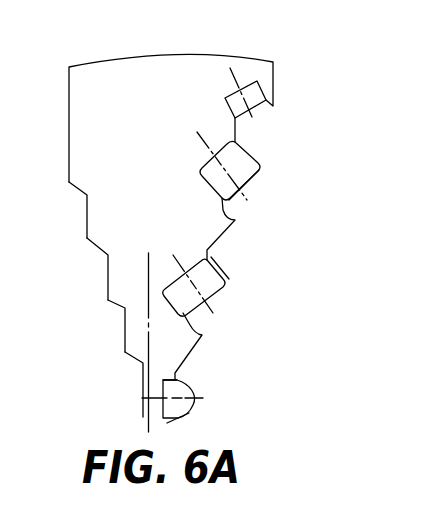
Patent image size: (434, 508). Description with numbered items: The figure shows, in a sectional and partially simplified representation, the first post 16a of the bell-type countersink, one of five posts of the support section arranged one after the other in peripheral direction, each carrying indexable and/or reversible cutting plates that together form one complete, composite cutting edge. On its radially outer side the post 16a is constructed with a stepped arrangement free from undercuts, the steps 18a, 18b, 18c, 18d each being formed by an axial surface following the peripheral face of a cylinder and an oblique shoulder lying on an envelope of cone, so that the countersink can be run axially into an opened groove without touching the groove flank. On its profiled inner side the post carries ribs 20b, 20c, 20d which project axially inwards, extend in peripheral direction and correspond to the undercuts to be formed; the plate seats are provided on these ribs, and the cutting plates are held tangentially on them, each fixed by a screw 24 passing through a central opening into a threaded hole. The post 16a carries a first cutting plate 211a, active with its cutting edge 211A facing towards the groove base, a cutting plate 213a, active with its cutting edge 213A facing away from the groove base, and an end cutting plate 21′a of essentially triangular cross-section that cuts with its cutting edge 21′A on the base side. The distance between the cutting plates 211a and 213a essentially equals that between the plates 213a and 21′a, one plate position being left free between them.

The post 16a is at (126, 160).
The step 18a is at (77, 195).
The step 18b is at (96, 259).
The step 18c is at (111, 314).
The step 18d is at (127, 369).
The rib 20b is at (236, 220).
The rib 20c is at (197, 400).
The rib 20d is at (203, 335).
The cutting plate 21′a is at (184, 383).
The cutting edge 21′A is at (186, 418).
The cutting plate 211a is at (252, 163).
The cutting edge 211A is at (250, 183).
The cutting plate 213a is at (220, 282).
The cutting edge 213A is at (228, 270).
The screw 24 is at (237, 86).